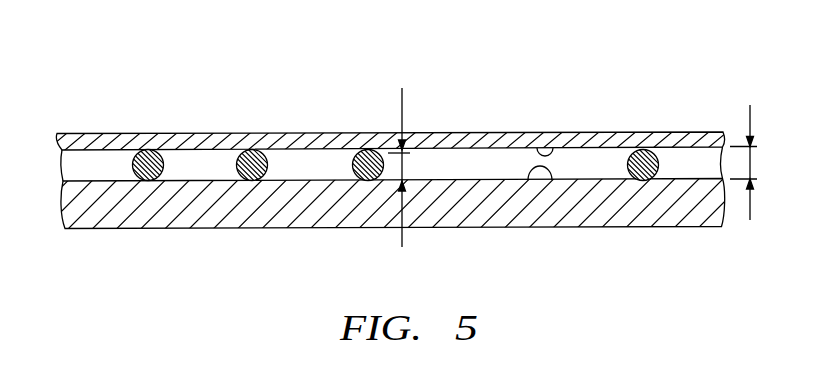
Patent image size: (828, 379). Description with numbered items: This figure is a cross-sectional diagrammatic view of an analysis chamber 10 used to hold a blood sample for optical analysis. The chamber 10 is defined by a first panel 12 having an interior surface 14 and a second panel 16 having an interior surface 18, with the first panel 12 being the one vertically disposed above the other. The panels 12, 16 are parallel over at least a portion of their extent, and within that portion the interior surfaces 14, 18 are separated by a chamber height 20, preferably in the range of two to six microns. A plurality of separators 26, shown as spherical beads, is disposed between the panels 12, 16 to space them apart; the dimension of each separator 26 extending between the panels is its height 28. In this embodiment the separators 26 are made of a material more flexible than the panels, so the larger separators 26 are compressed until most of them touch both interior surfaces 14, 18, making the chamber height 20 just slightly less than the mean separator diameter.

The analysis chamber 10 is at (407, 177).
The first panel 12 is at (121, 134).
The interior surface 14 is at (553, 148).
The second panel 16 is at (161, 228).
The interior surface 18 is at (552, 180).
The height 20 is at (750, 103).
The separators 26 is at (160, 152).
The height of the separator 28 is at (402, 105).